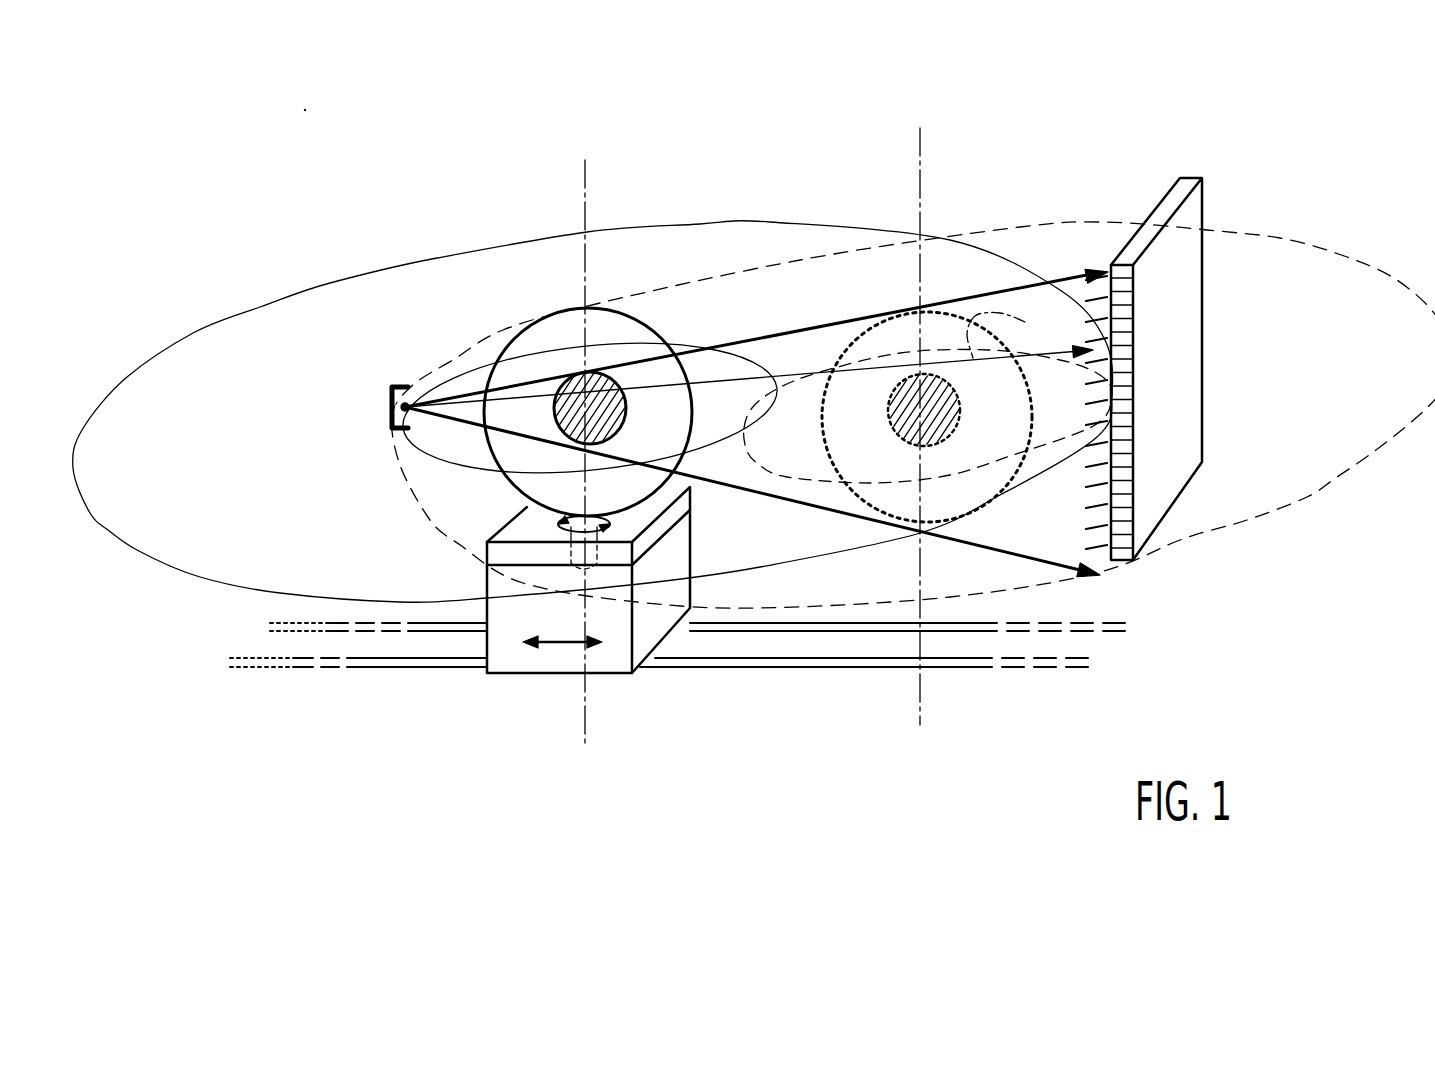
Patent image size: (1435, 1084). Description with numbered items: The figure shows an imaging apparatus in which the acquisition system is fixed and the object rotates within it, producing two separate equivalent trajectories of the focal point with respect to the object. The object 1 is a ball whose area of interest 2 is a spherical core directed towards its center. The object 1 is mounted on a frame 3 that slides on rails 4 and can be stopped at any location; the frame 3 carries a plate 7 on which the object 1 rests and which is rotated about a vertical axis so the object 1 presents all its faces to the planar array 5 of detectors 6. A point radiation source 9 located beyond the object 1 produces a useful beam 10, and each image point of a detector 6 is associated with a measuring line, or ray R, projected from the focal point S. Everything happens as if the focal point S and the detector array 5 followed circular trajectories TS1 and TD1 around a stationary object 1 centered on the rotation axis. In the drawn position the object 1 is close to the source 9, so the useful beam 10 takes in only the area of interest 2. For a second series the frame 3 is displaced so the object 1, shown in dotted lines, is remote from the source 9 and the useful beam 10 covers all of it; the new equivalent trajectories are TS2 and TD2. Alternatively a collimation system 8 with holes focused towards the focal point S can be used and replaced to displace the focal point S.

The object 1 is at (557, 300).
The area of interest 2 is at (556, 417).
The frame 3 is at (503, 655).
The rails 4 is at (727, 626).
The planar array of detectors 5 is at (1210, 250).
The detectors 6 is at (1131, 400).
The plate 7 is at (513, 552).
The collimation system 8 is at (1092, 470).
The point radiation source 9 is at (380, 409).
The useful beam 10 is at (967, 296).
The focal point S is at (390, 393).
The rays R is at (1008, 331).
The first detector trajectory TD1 is at (353, 280).
The second detector trajectory TD2 is at (907, 348).
The first focal point trajectory TS1 is at (437, 468).
The second focal point trajectory TS2 is at (1303, 494).